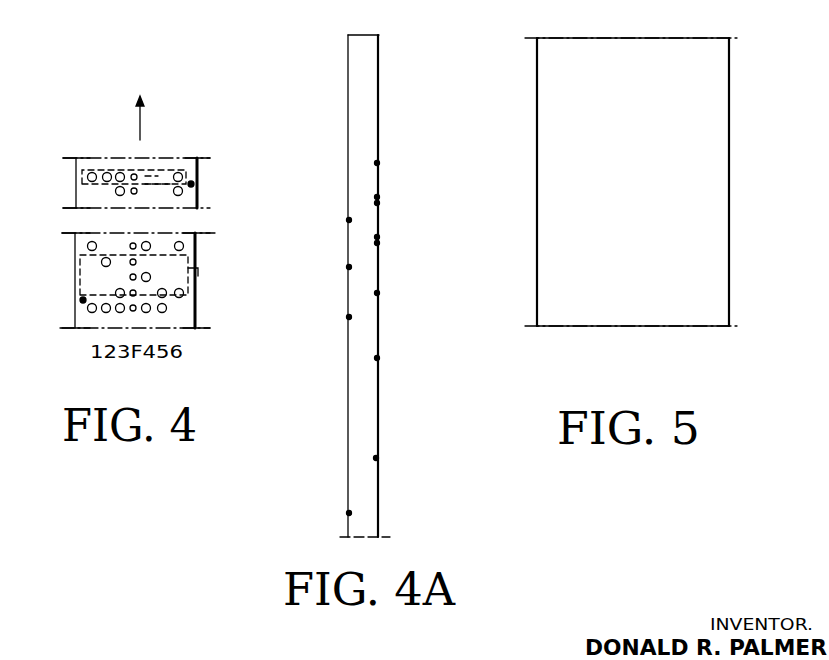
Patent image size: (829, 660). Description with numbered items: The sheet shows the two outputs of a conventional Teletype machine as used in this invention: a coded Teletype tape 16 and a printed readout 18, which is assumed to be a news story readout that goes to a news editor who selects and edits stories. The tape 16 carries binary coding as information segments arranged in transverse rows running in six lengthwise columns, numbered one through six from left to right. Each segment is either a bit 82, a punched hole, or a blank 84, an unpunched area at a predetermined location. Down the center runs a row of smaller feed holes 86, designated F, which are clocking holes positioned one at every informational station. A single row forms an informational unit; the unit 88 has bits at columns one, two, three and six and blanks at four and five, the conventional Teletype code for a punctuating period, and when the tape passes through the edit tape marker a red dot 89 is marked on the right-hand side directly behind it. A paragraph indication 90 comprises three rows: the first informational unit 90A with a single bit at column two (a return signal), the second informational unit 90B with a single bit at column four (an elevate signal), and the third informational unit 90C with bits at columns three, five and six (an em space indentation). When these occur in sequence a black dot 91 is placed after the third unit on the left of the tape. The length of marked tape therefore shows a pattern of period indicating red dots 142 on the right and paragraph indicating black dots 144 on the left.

In FIG. 4, the Teletype tape 16 is at (199, 198).
In FIG. 4, the bit 82 is at (93, 172).
In FIG. 4, the blank 84 is at (166, 179).
In FIG. 4, the feed holes 86 is at (133, 173).
In FIG. 4, the informational unit 88 is at (196, 166).
In FIG. 4, the red dot 89 is at (191, 184).
In FIG. 4, the paragraph indication 90 is at (130, 280).
In FIG. 4, the first informational unit 90A is at (68, 258).
In FIG. 4, the second informational unit 90B is at (70, 277).
In FIG. 4, the third informational unit 90C is at (70, 290).
In FIG. 4, the black dot 91 is at (83, 300).
In FIG. 4A, the period indicating red dots 142 is at (379, 163).
In FIG. 4A, the paragraph indicating black dots 144 is at (348, 221).
In FIG. 5, the printed readout 18 is at (730, 202).